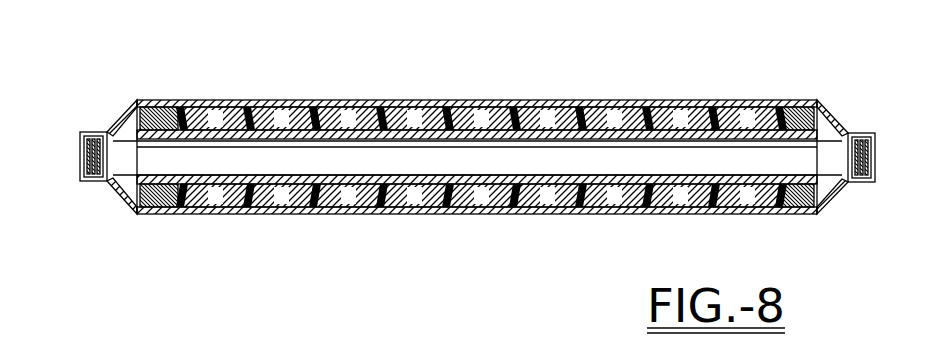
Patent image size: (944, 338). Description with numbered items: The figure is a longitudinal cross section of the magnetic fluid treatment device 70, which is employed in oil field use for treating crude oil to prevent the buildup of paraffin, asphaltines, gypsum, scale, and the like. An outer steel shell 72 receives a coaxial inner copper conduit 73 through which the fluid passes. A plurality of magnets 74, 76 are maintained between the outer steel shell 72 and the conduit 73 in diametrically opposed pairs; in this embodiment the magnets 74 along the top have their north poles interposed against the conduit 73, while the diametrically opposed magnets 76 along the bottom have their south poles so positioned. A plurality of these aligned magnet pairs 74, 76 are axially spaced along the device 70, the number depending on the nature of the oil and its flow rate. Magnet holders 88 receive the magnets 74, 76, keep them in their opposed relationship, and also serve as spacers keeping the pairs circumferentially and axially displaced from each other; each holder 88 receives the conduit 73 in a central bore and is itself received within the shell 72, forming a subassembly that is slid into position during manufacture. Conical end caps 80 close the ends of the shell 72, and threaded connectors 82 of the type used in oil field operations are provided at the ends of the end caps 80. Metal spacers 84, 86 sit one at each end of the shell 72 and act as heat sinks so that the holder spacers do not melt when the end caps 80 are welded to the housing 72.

The magnetic fluid treatment device 70 is at (377, 222).
The outer steel shell 72 is at (355, 102).
The inner copper conduit 73 is at (502, 174).
The magnets 74 is at (283, 107).
The magnets 76 is at (237, 198).
The conical end caps 80 is at (112, 184).
The threaded connectors 82 is at (88, 132).
The metal spacer 84 is at (152, 107).
The metal spacer 86 is at (793, 215).
The magnet holders 88 is at (457, 108).